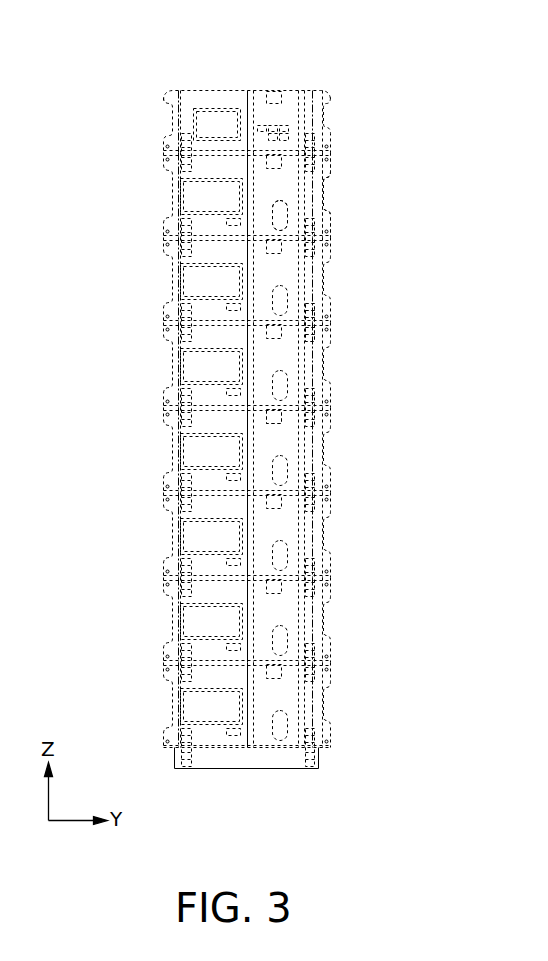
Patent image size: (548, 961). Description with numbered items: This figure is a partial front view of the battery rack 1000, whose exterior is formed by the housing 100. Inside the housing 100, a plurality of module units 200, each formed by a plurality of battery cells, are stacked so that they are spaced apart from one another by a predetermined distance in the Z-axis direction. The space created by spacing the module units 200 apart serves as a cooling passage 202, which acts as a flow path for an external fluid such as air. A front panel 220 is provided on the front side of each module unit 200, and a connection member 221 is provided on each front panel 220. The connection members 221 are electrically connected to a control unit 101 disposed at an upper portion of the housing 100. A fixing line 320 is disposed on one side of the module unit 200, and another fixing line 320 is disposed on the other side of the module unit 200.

The battery rack 1000 is at (135, 28).
The housing 100 is at (236, 98).
The control unit 101 is at (200, 108).
The module unit 200 is at (349, 278).
The cooling passage 202 is at (257, 411).
The front panel 220 is at (318, 226).
The connection member 221 is at (281, 203).
The fixing line 320 is at (317, 333).